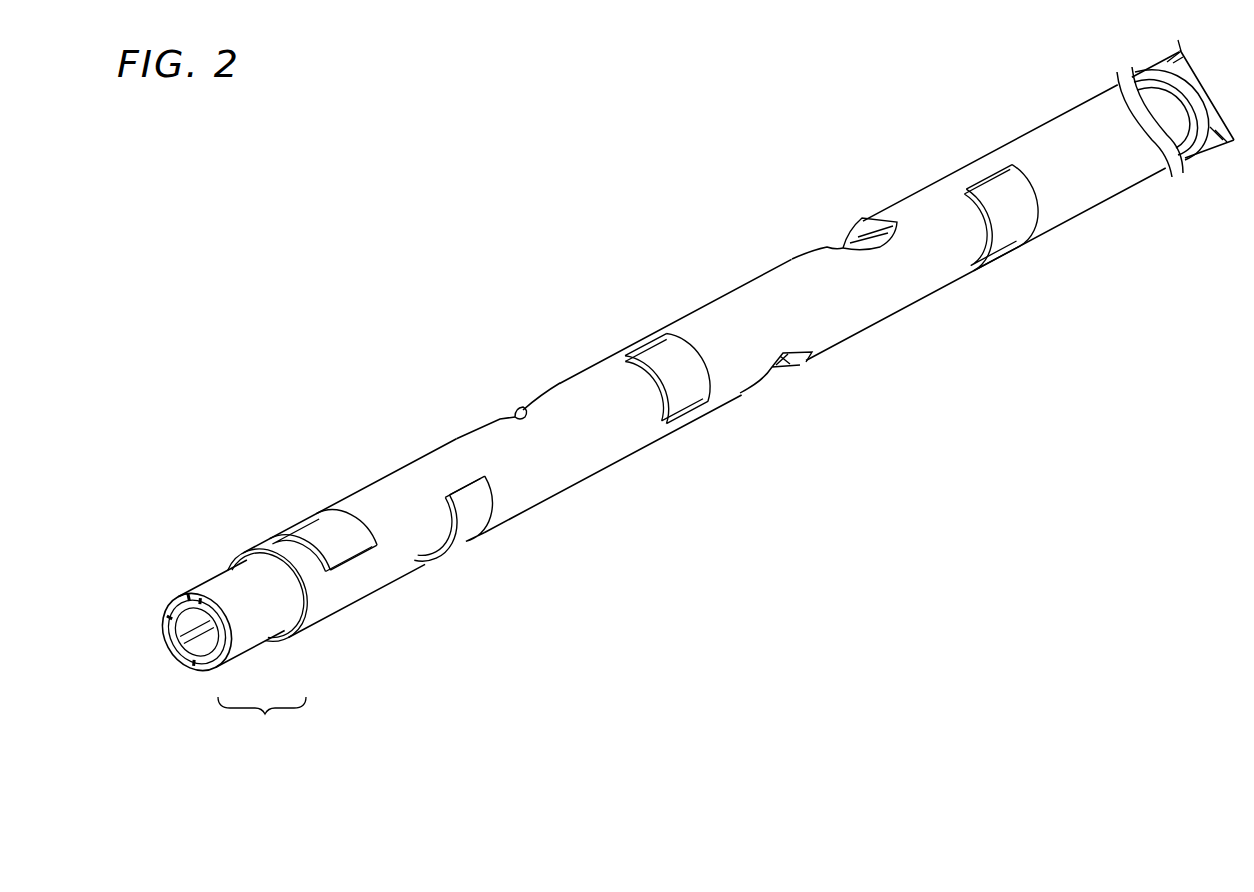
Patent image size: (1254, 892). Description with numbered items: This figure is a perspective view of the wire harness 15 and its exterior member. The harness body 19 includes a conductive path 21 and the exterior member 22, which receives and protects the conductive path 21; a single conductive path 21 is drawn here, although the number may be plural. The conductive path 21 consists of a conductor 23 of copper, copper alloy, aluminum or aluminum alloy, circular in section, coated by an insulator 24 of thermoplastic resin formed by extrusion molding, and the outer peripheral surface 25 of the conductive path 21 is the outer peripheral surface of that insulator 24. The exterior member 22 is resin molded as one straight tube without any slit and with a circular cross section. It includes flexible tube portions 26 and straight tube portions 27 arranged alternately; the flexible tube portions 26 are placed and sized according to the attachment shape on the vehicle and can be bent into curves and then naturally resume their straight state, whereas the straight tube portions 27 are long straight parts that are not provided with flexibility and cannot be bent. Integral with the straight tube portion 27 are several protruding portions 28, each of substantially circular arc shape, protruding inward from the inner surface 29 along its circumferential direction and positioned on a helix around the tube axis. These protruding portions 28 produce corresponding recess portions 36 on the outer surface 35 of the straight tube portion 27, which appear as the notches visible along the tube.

The wire harness 15 is at (355, 132).
The harness body 19 is at (369, 300).
The conductive path 21 is at (262, 721).
The exterior member 22 is at (758, 304).
The conductor 23 is at (221, 650).
The insulator 24 is at (247, 637).
The outer peripheral surface of the conductive path 25 is at (223, 592).
The flexible tube portion 26 is at (1224, 141).
The straight tube portion 27 is at (858, 313).
The protruding portion 28 is at (330, 534).
The inner surface of the straight tube portion 29 is at (318, 608).
The outer surface of the straight tube portion 35 is at (326, 612).
The recess portion 36 is at (340, 520).